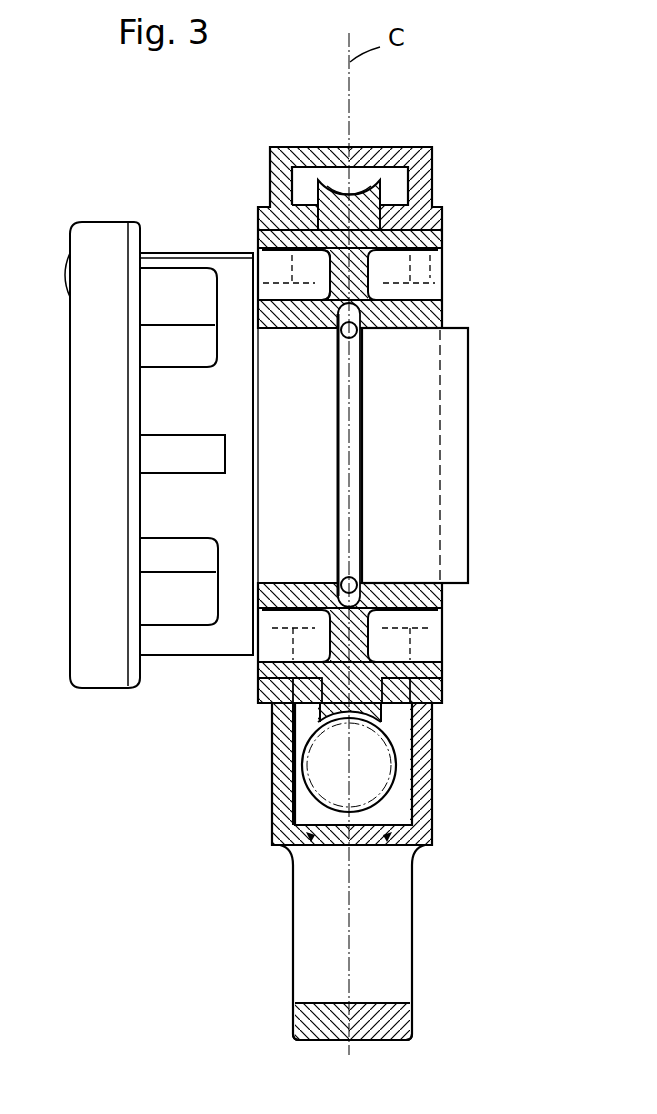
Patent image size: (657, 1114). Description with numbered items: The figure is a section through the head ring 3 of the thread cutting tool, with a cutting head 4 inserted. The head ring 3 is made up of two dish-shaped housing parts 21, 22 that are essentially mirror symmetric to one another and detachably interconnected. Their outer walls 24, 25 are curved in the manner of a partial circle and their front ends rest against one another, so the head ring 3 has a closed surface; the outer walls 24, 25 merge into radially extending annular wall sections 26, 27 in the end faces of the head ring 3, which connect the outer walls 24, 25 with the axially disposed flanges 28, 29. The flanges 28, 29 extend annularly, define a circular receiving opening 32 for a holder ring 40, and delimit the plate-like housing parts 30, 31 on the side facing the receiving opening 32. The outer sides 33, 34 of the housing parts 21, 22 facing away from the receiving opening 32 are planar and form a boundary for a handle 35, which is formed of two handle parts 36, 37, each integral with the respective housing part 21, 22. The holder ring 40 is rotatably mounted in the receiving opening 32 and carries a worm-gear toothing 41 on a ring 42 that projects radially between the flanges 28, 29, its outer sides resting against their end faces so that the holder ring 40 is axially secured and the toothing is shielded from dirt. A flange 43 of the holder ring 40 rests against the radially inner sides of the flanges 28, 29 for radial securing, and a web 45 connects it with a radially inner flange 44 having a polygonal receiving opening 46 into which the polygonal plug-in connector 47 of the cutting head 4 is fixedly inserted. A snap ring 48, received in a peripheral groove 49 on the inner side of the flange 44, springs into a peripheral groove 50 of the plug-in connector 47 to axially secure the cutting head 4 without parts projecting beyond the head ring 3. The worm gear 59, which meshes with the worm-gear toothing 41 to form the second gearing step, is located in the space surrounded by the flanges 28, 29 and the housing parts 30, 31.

The head ring 3 is at (451, 147).
The cutting head 4 is at (95, 666).
The housing part 21 is at (422, 137).
The housing part 22 is at (274, 138).
The outer wall 24 is at (374, 162).
The outer wall 25 is at (323, 152).
The annular wall section 26 is at (410, 190).
The annular wall section 27 is at (282, 183).
The flange 28 is at (443, 212).
The flange 29 is at (260, 218).
The plate-like housing part 30 is at (420, 770).
The plate-like housing part 31 is at (280, 767).
The receiving opening 32 is at (282, 254).
The outer side 33 is at (372, 848).
The outer side 34 is at (328, 848).
The handle 35 is at (435, 947).
The handle part 36 is at (412, 1024).
The handle part 37 is at (310, 1025).
The holder ring 40 is at (454, 274).
The worm-gear toothing 41 is at (380, 722).
The ring 42 is at (363, 678).
The flange 43 is at (442, 242).
The inner flange 44 is at (433, 317).
The web 45 is at (340, 305).
The receiving opening 46 is at (417, 577).
The plug-in connector 47 is at (430, 427).
The snap ring 48 is at (355, 577).
The peripheral groove 49 is at (362, 388).
The peripheral groove 50 is at (348, 472).
The worm gear 59 is at (370, 790).